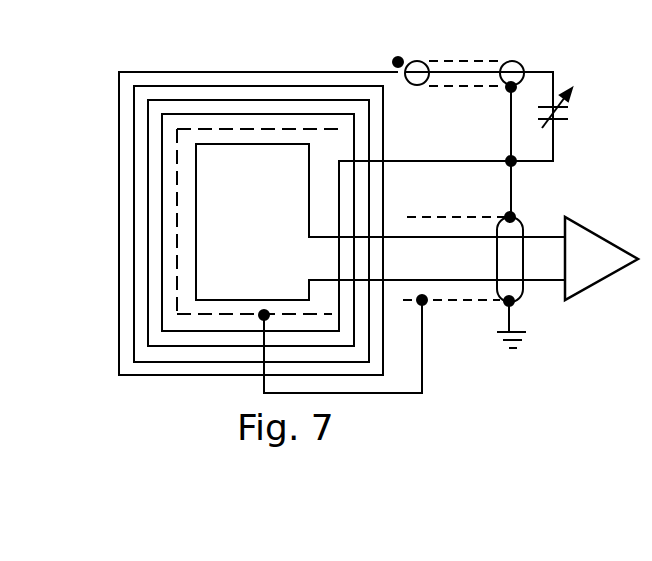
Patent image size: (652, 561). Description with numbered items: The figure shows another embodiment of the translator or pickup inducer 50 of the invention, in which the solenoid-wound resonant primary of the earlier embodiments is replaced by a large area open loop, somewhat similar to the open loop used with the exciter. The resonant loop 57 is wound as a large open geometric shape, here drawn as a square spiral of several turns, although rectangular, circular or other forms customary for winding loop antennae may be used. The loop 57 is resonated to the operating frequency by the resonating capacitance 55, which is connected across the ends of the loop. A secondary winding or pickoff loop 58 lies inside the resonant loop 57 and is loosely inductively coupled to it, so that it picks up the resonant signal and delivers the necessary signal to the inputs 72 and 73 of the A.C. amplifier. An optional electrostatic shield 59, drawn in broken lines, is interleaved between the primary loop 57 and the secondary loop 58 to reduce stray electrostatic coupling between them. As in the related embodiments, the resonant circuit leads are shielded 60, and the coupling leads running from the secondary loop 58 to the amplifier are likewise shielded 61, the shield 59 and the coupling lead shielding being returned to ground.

The sensor probe assembly 50 is at (90, 189).
The resonating capacitance 55 is at (575, 106).
The resonant loop 57 is at (252, 68).
The secondary winding or loop 58 is at (198, 240).
The electrostatic shield 59 is at (246, 300).
The shielded resonant circuit leads 60 is at (512, 61).
The shielded coupling leads 61 is at (497, 308).
The A.C. amplifier input 72 is at (537, 233).
The A.C. amplifier input 73 is at (542, 292).